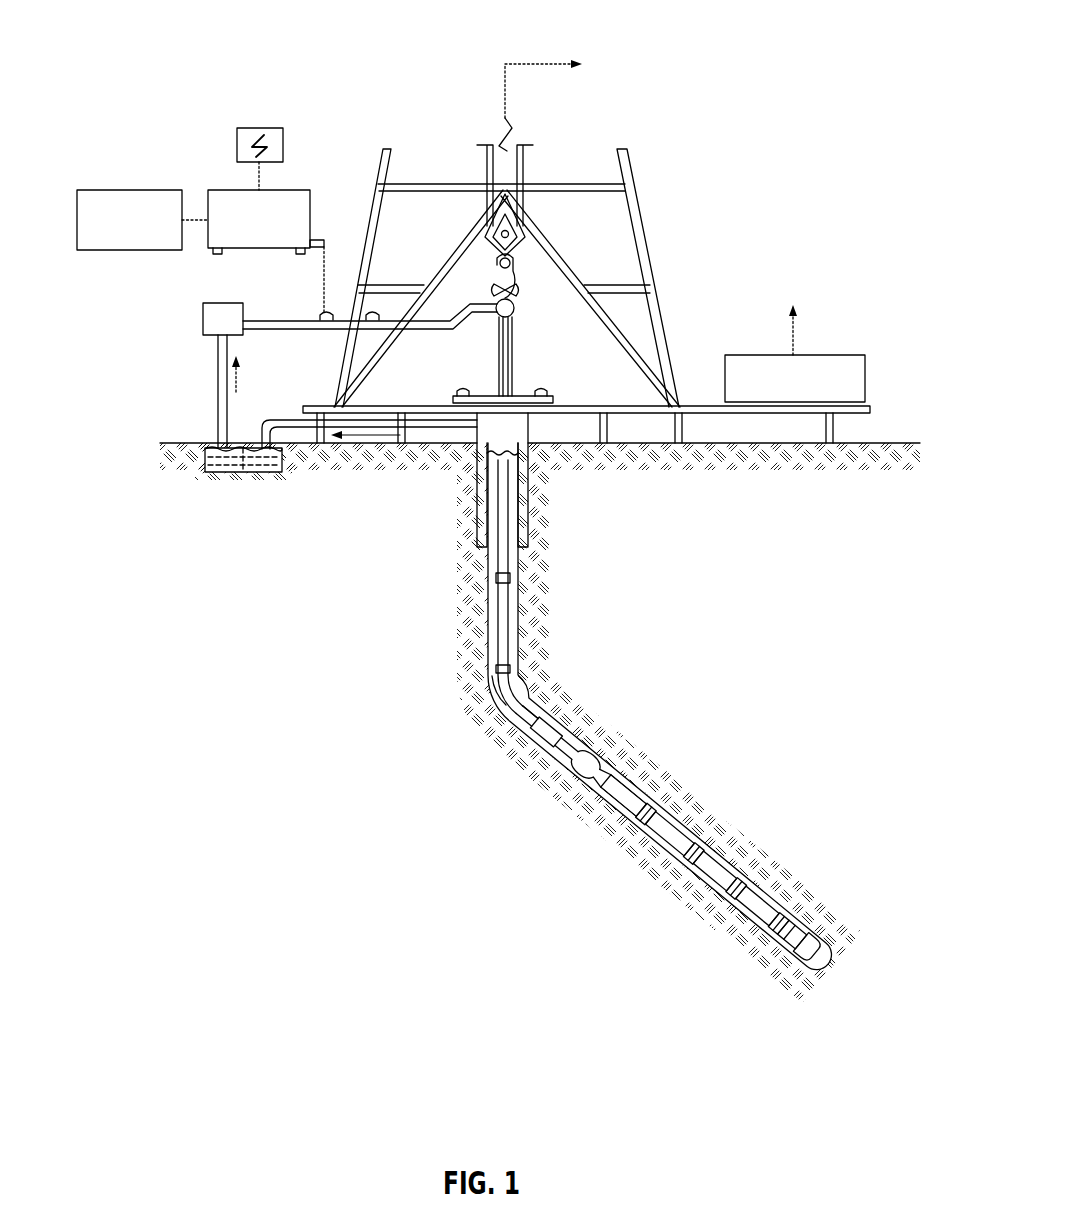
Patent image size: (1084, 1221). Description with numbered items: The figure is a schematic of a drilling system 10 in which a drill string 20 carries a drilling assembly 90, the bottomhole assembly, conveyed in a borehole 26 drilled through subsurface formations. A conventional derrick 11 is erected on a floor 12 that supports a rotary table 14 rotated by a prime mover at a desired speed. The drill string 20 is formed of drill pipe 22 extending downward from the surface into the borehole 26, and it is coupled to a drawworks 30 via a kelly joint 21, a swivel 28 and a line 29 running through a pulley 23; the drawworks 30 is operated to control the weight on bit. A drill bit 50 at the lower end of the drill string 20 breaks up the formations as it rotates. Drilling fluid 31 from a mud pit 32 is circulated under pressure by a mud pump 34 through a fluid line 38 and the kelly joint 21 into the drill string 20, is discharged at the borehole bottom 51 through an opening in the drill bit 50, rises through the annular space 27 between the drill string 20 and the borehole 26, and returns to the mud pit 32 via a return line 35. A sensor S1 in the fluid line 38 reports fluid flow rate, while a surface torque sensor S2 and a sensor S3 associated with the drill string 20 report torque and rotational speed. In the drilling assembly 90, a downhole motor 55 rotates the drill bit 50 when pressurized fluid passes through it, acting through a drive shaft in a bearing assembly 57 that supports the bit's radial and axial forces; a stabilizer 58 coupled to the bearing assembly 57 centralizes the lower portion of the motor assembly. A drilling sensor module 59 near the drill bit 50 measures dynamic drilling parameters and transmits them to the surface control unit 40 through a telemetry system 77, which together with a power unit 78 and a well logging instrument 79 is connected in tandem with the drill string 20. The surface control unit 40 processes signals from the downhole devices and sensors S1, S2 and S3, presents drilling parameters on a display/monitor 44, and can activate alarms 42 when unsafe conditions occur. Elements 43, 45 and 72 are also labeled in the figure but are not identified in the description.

The drilling system 10 is at (426, 124).
The derrick 11 is at (660, 291).
The floor 12 is at (681, 402).
The rotary table 14 is at (524, 393).
The drill string 20 is at (529, 613).
The kelly joint 21 is at (514, 343).
The drill pipe 22 is at (493, 591).
The pulley 23 is at (509, 236).
The borehole 26 is at (528, 690).
The annular space 27 is at (558, 716).
The swivel 28 is at (500, 314).
The line 29 is at (528, 170).
The drawworks 30 is at (846, 354).
The drilling fluid 31 is at (205, 462).
The mud pit 32 is at (262, 425).
The mud pump 34 is at (203, 318).
The return line 35 is at (405, 441).
The fluid line 38 is at (217, 382).
The surface control unit 40 is at (238, 190).
The alarms 42 is at (256, 128).
The sensor 43 is at (320, 313).
The display/monitor 44 is at (126, 190).
The communication link 45 is at (321, 241).
The drill bit 50 is at (857, 945).
The borehole bottom 51 is at (800, 992).
The downhole motor 55 is at (697, 832).
The bearing assembly 57 is at (803, 893).
The stabilizer 58 is at (822, 928).
The drilling sensor module 59 is at (795, 944).
The kick-off point 72 is at (496, 682).
The telemetry system 77 is at (575, 792).
The power unit 78 is at (500, 722).
The well logging instrument 79 is at (528, 752).
The drilling assembly 90 is at (708, 726).
The sensor S1 is at (374, 311).
The surface torque sensor S2 is at (547, 391).
The sensor S3 is at (461, 390).